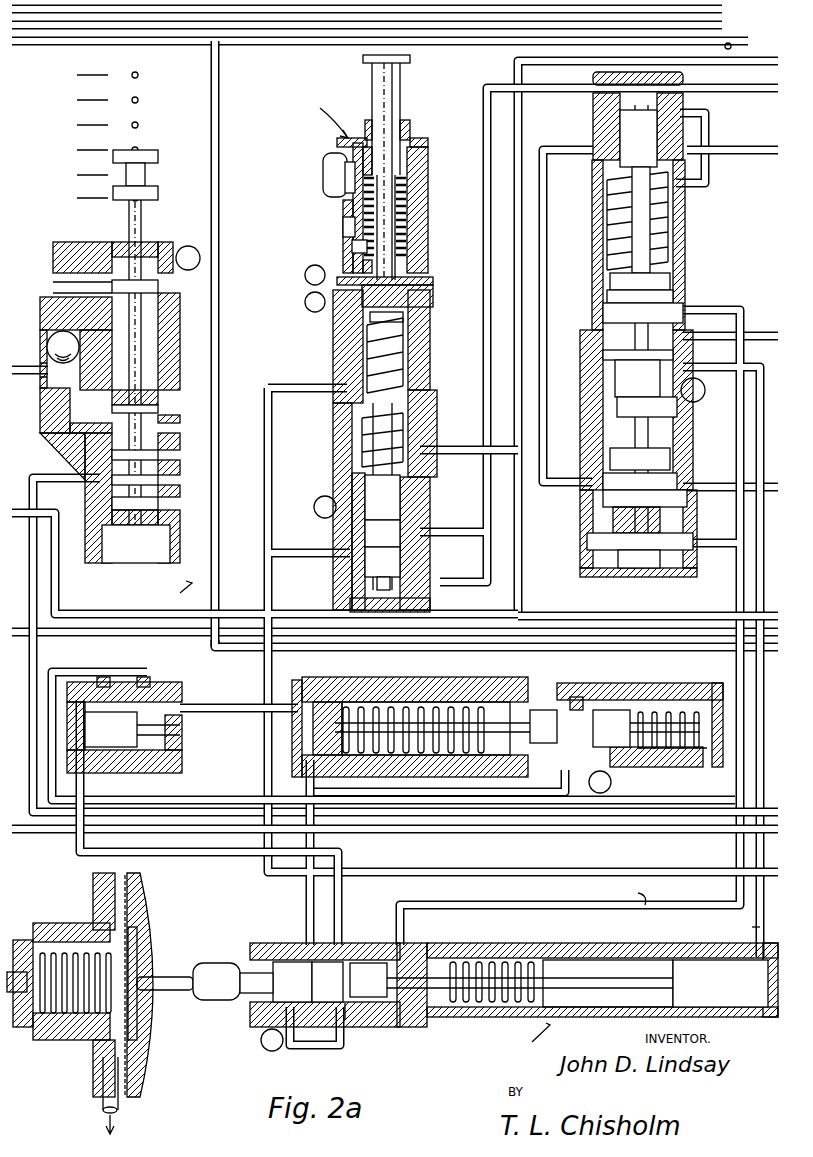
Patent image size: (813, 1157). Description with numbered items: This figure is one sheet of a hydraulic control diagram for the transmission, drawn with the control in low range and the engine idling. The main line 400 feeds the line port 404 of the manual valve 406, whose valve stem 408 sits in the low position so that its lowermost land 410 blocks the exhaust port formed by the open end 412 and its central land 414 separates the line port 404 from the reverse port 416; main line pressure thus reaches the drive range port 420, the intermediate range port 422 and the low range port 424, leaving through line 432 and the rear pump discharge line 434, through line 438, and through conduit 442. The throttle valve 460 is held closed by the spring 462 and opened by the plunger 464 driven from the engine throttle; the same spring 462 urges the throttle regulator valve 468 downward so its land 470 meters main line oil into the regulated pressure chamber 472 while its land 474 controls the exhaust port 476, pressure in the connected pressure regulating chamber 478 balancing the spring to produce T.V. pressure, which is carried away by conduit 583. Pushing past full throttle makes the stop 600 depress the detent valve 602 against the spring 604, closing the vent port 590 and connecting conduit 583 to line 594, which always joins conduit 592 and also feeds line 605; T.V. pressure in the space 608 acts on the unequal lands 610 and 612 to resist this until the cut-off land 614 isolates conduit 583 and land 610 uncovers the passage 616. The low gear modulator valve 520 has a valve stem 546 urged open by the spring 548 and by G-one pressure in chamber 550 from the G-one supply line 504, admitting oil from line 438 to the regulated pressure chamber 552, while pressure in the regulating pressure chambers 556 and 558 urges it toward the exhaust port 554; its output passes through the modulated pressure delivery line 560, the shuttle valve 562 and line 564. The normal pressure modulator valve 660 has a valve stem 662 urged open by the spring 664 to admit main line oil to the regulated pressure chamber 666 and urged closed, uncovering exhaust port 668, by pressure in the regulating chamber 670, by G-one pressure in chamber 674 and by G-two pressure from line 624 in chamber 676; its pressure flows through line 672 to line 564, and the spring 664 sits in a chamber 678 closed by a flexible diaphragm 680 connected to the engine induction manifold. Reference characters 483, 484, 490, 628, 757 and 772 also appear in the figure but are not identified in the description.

The main line 400 is at (33, 513).
The line port 404 is at (162, 410).
The manual valve 406 is at (90, 243).
The valve stem 408 is at (147, 150).
The lowermost land 410 is at (160, 516).
The open end 412 is at (112, 538).
The central land 414 is at (164, 393).
The reverse port 416 is at (162, 286).
The drive range port 420 is at (162, 456).
The intermediate range port 422 is at (162, 481).
The low range port 424 is at (162, 504).
The line 432 is at (221, 158).
The rear pump discharge line 434 is at (16, 47).
The low range control line 438 is at (220, 575).
The conduit 442 is at (46, 473).
The throttle valve 460 is at (433, 281).
The spring 462 is at (433, 296).
The plunger 464 is at (402, 82).
The throttle regulator valve 468 is at (395, 530).
The land 470 is at (400, 560).
The regulated pressure chamber 472 is at (362, 530).
The land 474 is at (400, 492).
The exhaust port 476 is at (317, 502).
The pressure regulating chamber 478 is at (396, 596).
The valve body 483 is at (340, 340).
The valve spring 484 is at (410, 310).
The exhaust port 490 is at (304, 302).
The G1 supply line 504 is at (36, 833).
The low gear modulator valve 520 is at (668, 680).
The valve stem 546 is at (611, 728).
The spring 548 is at (672, 700).
The chamber 550 is at (668, 752).
The regulated pressure chamber 552 is at (576, 697).
The exhaust port 554 is at (611, 787).
The regulating pressure chamber 556 is at (545, 726).
The regulating pressure chamber 558 is at (292, 728).
The modulated pressure delivery line 560 is at (208, 700).
The shuttle valve 562 is at (118, 772).
The line 564 is at (140, 672).
The conduit 583 is at (491, 420).
The vent port 590 is at (304, 275).
The conduit 592 is at (768, 156).
The line 594 is at (572, 153).
The stop 600 is at (344, 167).
The detent valve 602 is at (408, 125).
The spring 604 is at (343, 228).
The line 605 is at (722, 483).
The space 608 is at (352, 247).
The land 610 is at (410, 178).
The land 612 is at (410, 222).
The cut-off land 614 is at (345, 190).
The passage 616 is at (322, 178).
The G2 pressure line 624 is at (712, 540).
The conduit 628 is at (684, 612).
The normal pressure modulator valve 660 is at (584, 1028).
The valve stem 662 is at (300, 960).
The spring 664 is at (62, 1020).
The regulated pressure chamber 666 is at (285, 945).
The exhaust port 668 is at (258, 1042).
The regulating chamber 670 is at (350, 1022).
The line 672 is at (343, 900).
The pressure chamber 674 is at (745, 1000).
The chamber 676 is at (385, 960).
The chamber 678 is at (80, 940).
The flexible diaphragm 680 is at (130, 920).
The conduit 757 is at (469, 453).
The valve land 772 is at (158, 245).